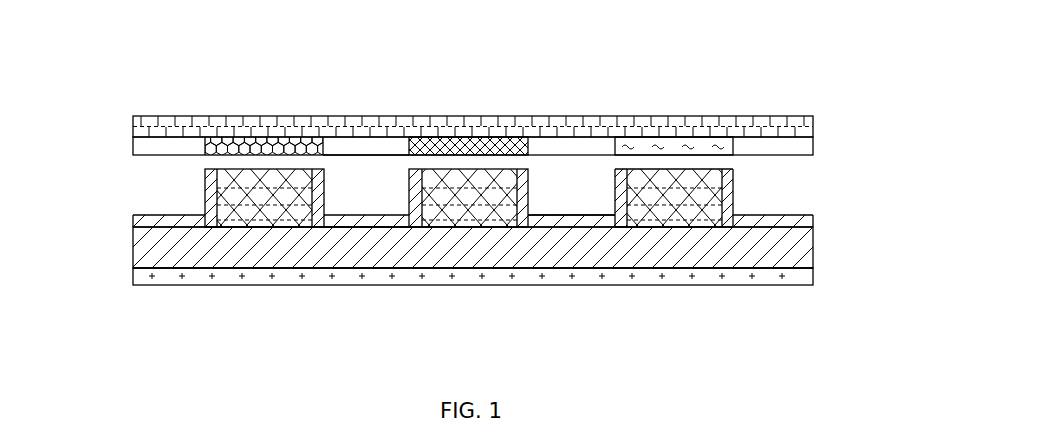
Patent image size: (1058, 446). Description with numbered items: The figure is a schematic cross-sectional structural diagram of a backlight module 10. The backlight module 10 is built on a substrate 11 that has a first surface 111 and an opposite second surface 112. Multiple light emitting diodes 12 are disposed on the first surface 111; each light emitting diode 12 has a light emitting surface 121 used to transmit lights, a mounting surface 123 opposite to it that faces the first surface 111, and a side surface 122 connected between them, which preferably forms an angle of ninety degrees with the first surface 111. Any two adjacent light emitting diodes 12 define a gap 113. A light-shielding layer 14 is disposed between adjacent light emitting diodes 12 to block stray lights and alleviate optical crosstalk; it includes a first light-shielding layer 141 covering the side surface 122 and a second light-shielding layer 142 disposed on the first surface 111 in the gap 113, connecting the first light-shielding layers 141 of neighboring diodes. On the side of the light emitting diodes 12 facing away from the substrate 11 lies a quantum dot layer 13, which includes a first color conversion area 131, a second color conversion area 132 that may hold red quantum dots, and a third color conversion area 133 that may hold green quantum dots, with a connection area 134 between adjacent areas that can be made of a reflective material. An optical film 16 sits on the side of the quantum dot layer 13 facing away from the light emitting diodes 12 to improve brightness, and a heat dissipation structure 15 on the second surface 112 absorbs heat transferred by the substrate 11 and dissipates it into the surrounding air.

The backlight module 10 is at (58, 32).
The substrate 11 is at (493, 252).
The first surface 111 is at (817, 229).
The second surface 112 is at (817, 270).
The gap 113 is at (548, 198).
The light emitting diode 12 is at (441, 202).
The light emitting surface 121 is at (712, 166).
The side surface 122 is at (730, 199).
The mounting surface 123 is at (679, 231).
The quantum dot layer 13 is at (440, 106).
The first color conversion area 131 is at (263, 146).
The second color conversion area 132 is at (462, 146).
The third color conversion area 133 is at (625, 146).
The connection area 134 is at (366, 146).
The light-shielding layer 14 is at (455, 299).
The first light-shielding layer 141 is at (310, 217).
The second light-shielding layer 142 is at (358, 217).
The heat dissipation structure 15 is at (142, 279).
The optical film 16 is at (150, 130).